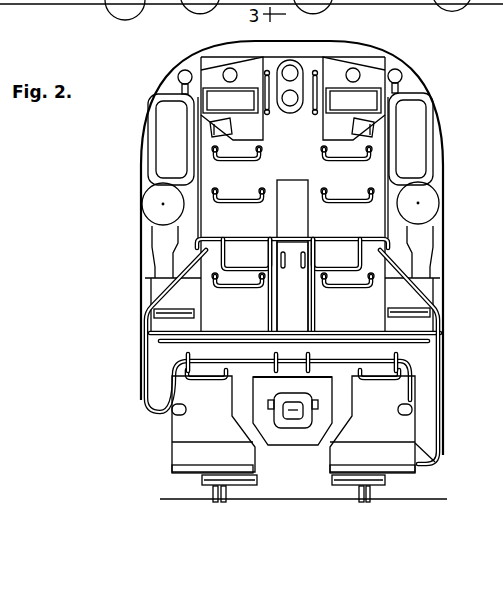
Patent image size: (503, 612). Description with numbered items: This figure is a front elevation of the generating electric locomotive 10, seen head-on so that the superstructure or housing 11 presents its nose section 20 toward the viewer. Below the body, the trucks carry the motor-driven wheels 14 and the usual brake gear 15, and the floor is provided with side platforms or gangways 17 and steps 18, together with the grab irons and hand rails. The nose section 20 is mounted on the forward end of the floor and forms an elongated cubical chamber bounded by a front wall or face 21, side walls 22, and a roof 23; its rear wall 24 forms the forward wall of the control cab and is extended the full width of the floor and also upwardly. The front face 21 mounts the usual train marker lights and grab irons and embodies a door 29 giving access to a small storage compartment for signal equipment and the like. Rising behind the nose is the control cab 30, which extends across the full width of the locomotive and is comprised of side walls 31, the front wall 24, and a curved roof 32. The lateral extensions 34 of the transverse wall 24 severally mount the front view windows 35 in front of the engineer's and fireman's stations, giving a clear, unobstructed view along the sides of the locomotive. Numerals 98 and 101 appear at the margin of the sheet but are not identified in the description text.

The generating electric locomotive 10 is at (429, 78).
The superstructure 11 is at (438, 95).
The motor-driven wheels 14 is at (125, 4).
The brake gear 15 is at (186, 4).
The side platforms or gangways 17 is at (162, 332).
The steps 18 is at (52, 4).
The nose section 20 is at (293, 194).
The front wall or face 21 is at (315, 256).
The side walls 22 is at (201, 180).
The roof 23 is at (213, 56).
The rear wall 24 is at (197, 216).
The door 29 is at (304, 307).
The control cab 30 is at (144, 158).
The side walls 31 is at (142, 167).
The curved roof 32 is at (338, 44).
The lateral extensions 34 is at (146, 183).
The front view windows 35 is at (160, 128).
The coupling 98 is at (357, 4).
The coupling member 101 is at (488, 4).